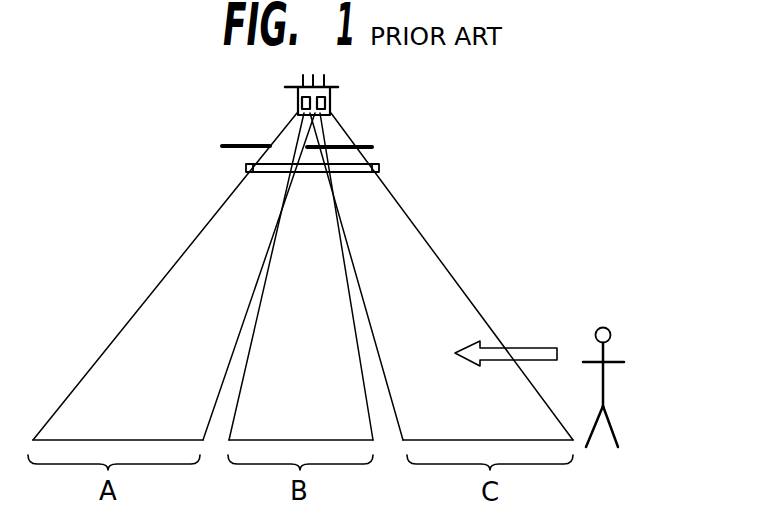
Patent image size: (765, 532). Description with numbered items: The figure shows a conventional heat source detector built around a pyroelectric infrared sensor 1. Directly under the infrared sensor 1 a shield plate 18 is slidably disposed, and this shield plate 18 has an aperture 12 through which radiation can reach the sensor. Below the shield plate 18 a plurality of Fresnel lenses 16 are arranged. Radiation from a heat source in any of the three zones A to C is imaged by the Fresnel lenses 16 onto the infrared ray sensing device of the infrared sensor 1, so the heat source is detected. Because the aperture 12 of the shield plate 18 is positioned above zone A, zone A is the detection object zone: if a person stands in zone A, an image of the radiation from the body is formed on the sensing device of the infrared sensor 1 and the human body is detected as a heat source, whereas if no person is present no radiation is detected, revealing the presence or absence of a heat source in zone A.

The pyroelectric infrared sensor 1 is at (337, 99).
The aperture 12 is at (278, 118).
The Fresnel lenses 16 is at (247, 168).
The shield plate 18 is at (221, 146).